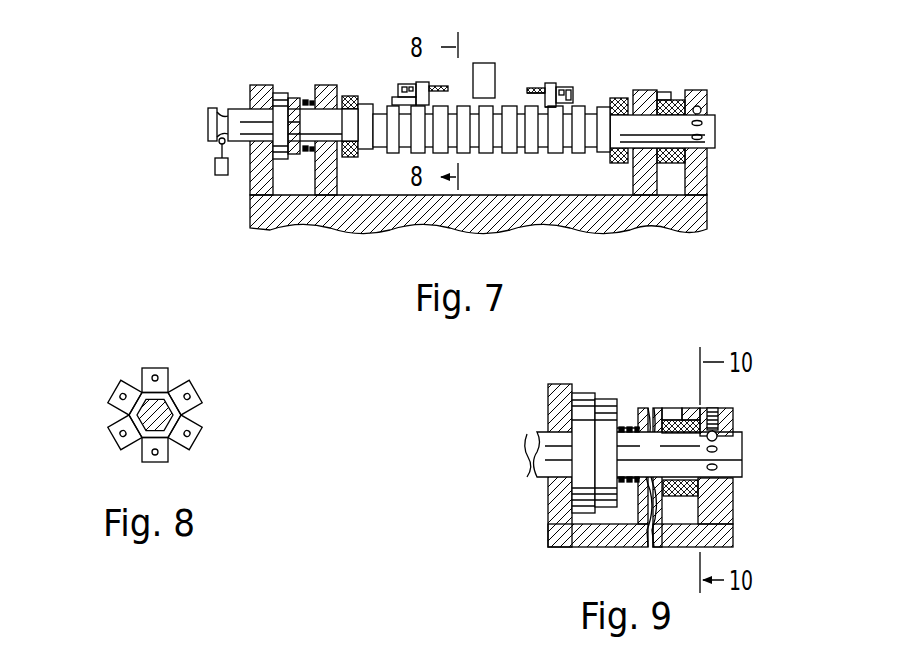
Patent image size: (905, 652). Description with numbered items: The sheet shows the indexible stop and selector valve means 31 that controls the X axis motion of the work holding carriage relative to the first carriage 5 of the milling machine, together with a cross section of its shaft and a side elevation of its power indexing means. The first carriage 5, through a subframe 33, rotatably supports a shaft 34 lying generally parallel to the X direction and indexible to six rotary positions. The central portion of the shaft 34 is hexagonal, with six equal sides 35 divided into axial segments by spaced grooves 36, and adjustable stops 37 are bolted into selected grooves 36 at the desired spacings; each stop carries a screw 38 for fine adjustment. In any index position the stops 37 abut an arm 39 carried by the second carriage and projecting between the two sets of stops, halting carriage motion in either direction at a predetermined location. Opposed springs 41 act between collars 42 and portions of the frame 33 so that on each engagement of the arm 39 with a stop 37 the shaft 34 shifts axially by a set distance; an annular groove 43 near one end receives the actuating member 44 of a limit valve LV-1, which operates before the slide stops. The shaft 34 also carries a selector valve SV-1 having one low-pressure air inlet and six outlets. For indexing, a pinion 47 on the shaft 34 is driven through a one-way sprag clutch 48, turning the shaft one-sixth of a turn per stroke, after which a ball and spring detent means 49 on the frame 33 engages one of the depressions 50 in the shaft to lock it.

In FIG. 7, the first carriage 5 is at (250, 220).
In FIG. 7, the indexible stop and selector valve means 31 is at (351, 92).
In FIG. 7, the subframe 33 is at (708, 200).
In FIG. 7, the shaft 34 is at (537, 87).
In FIG. 8, the shaft 34 is at (123, 420).
In FIG. 9, the shaft 34 is at (537, 430).
In FIG. 8, the sides 35 is at (173, 392).
In FIG. 7, the grooves 36 is at (618, 100).
In FIG. 8, the grooves 36 is at (140, 442).
In FIG. 7, the adjustable stops 37 is at (423, 82).
In FIG. 8, the adjustable stops 37 is at (155, 368).
In FIG. 7, the screws 38 is at (442, 83).
In FIG. 8, the screws 38 is at (193, 397).
In FIG. 7, the arm 39 is at (490, 75).
In FIG. 7, the opposed springs 41 is at (307, 98).
In FIG. 9, the opposed springs 41 is at (628, 425).
In FIG. 7, the collars 42 is at (648, 92).
In FIG. 7, the annular groove 43 is at (218, 106).
In FIG. 7, the actuating member 44 is at (218, 141).
In FIG. 7, the pinion 47 is at (665, 100).
In FIG. 9, the pinion 47 is at (672, 408).
In FIG. 7, the sprag clutch 48 is at (690, 152).
In FIG. 9, the sprag clutch 48 is at (700, 490).
In FIG. 9, the ball and spring detent means 49 is at (735, 425).
In FIG. 7, the depressions 50 is at (716, 128).
In FIG. 9, the depressions 50 is at (742, 462).
In FIG. 7, the selector valve SV-1 is at (287, 88).
In FIG. 9, the selector valve SV-1 is at (588, 390).
In FIG. 7, the limit valve LV-1 is at (222, 176).